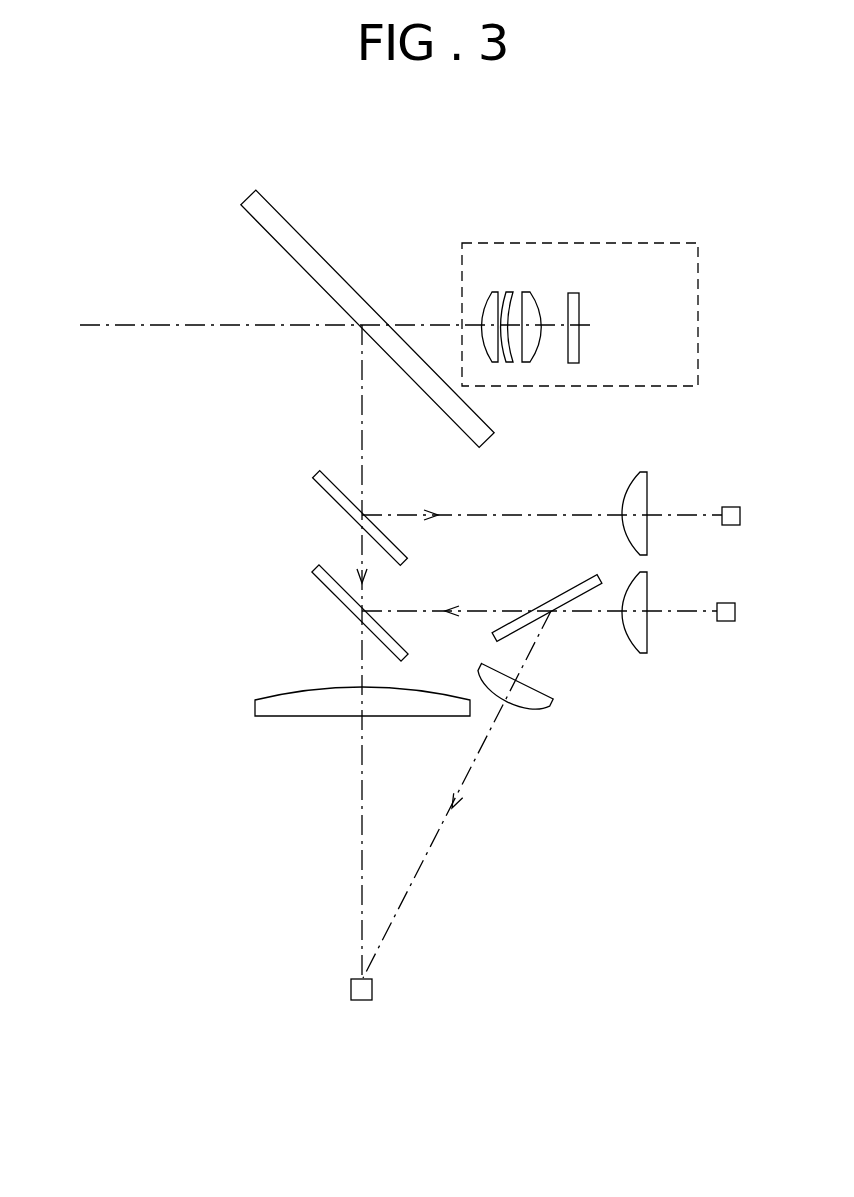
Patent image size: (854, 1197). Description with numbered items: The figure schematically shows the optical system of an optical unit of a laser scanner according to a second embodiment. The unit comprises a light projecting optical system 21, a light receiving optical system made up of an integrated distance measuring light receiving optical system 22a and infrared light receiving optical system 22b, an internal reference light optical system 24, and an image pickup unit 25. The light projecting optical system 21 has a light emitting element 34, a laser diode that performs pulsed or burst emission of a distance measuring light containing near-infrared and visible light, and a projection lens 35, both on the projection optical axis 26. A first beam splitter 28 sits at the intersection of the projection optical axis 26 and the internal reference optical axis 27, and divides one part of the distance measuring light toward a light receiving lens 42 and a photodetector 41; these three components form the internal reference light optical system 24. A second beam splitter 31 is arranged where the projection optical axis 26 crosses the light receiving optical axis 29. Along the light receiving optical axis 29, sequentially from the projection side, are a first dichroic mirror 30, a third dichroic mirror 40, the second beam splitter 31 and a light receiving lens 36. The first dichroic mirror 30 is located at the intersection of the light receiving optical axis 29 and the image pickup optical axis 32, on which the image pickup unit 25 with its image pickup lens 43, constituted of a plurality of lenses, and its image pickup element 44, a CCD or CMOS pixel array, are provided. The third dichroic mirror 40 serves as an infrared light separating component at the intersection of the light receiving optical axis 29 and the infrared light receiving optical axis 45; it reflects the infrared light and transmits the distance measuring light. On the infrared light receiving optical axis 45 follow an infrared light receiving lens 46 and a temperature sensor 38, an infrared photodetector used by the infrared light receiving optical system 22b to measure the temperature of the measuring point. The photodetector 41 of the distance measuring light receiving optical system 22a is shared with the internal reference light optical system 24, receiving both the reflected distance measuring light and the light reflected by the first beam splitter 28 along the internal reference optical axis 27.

The light projecting optical system 21 is at (708, 590).
The distance measuring light receiving optical system 22a is at (335, 855).
The infrared light receiving optical system 22b is at (585, 500).
The internal reference light optical system 24 is at (467, 823).
The image pickup unit 25 is at (608, 243).
The projection optical axis 26 is at (580, 613).
The internal reference optical axis 27 is at (468, 775).
The first beam splitter 28 is at (555, 597).
The light receiving optical axis 29 is at (362, 800).
The first dichroic mirror 30 is at (277, 242).
The second beam splitter 31 is at (328, 595).
The image pickup optical axis 32 is at (420, 323).
The light emitting element 34 is at (728, 622).
The projection lens 35 is at (641, 653).
The light receiving lens 36 is at (287, 689).
The temperature sensor 38 is at (728, 505).
The third dichroic mirror 40 is at (332, 498).
The photodetector 41 is at (350, 988).
The light receiving lens 42 is at (552, 712).
The image pickup lens 43 is at (510, 290).
The image pickup element 44 is at (582, 313).
The infrared light receiving optical axis 45 is at (535, 515).
The infrared light receiving lens 46 is at (645, 472).